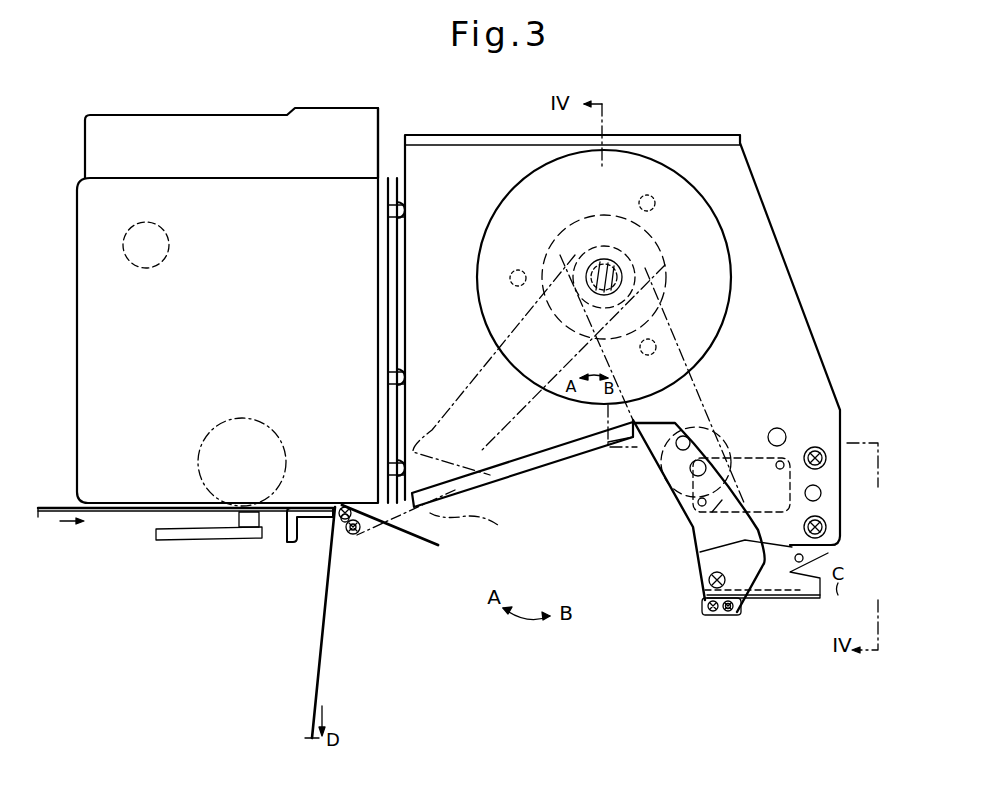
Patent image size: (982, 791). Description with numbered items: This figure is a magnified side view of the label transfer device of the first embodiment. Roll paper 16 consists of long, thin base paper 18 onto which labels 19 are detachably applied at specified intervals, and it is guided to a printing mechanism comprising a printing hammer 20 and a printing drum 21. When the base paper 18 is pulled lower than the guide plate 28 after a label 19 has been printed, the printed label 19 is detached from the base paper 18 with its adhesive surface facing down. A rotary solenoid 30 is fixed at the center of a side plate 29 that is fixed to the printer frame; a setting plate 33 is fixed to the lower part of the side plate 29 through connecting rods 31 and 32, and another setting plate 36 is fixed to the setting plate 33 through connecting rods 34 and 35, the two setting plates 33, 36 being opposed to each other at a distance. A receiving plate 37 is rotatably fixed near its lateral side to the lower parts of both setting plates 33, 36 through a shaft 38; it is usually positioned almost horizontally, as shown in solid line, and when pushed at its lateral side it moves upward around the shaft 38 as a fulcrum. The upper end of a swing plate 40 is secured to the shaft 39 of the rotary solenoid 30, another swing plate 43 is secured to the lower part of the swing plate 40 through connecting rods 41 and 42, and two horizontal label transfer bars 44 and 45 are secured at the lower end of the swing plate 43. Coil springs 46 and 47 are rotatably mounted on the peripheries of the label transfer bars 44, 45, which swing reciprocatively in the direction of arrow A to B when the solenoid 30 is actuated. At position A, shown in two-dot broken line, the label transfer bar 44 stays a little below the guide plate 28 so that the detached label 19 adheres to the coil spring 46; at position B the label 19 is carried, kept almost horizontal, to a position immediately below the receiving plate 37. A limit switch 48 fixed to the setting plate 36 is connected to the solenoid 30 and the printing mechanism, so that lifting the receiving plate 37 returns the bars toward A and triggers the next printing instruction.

The roll paper 16 is at (48, 516).
The base paper 18 is at (114, 512).
The label 19 is at (62, 505).
The printing hammer 20 is at (250, 532).
The printing drum 21 is at (230, 440).
The guide plate 28 is at (312, 506).
The side plate 29 is at (720, 148).
The rotary solenoid 30 is at (628, 162).
The connecting rod 31 is at (824, 452).
The connecting rod 32 is at (826, 529).
The setting plate 33 is at (840, 548).
The connecting rod 34 is at (786, 430).
The connecting rod 35 is at (822, 497).
The setting plate 36 is at (741, 485).
The receiving plate 37 is at (795, 585).
The shaft 38 is at (705, 590).
The shaft 39 is at (638, 272).
The swing plate 40 is at (481, 407).
The connecting rod 41 is at (660, 458).
The connecting rod 42 is at (697, 473).
The swing plate 43 is at (700, 552).
The label transfer bar 44 is at (338, 520).
The label transfer bar 45 is at (353, 536).
The coil spring 46 is at (344, 526).
The coil spring 47 is at (357, 531).
The limit switch 48 is at (703, 510).